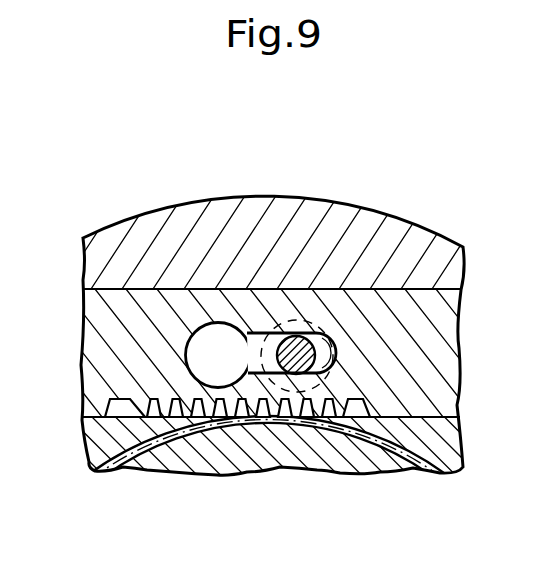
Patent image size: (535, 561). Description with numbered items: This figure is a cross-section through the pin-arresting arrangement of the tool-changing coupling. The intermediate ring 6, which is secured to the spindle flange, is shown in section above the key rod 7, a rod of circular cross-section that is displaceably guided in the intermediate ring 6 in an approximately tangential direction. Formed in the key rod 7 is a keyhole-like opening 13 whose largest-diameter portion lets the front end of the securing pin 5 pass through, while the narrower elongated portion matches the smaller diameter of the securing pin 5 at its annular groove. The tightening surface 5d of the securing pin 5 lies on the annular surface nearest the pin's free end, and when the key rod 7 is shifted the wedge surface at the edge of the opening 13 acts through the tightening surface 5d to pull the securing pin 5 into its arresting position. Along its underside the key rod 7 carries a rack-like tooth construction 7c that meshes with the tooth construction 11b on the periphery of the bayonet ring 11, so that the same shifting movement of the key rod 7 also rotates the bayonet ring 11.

The keyhole-like opening 13 is at (248, 334).
The tightening surface 5d is at (273, 333).
The securing pin 5 is at (312, 336).
The intermediate ring 6 is at (405, 238).
The key rod 7 is at (442, 373).
The tooth construction 7c is at (158, 407).
The bayonet ring 11 is at (212, 450).
The tooth construction 11b is at (374, 437).